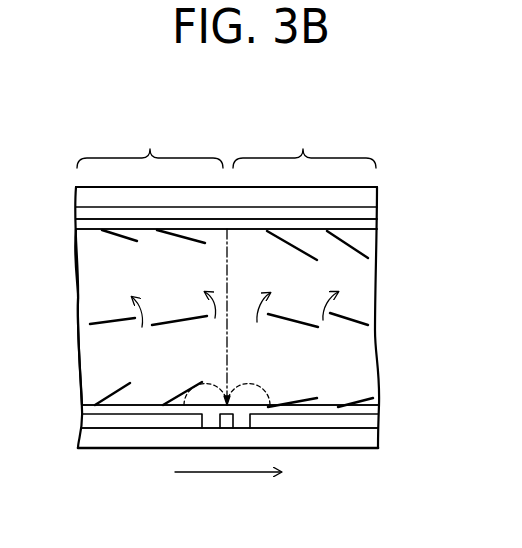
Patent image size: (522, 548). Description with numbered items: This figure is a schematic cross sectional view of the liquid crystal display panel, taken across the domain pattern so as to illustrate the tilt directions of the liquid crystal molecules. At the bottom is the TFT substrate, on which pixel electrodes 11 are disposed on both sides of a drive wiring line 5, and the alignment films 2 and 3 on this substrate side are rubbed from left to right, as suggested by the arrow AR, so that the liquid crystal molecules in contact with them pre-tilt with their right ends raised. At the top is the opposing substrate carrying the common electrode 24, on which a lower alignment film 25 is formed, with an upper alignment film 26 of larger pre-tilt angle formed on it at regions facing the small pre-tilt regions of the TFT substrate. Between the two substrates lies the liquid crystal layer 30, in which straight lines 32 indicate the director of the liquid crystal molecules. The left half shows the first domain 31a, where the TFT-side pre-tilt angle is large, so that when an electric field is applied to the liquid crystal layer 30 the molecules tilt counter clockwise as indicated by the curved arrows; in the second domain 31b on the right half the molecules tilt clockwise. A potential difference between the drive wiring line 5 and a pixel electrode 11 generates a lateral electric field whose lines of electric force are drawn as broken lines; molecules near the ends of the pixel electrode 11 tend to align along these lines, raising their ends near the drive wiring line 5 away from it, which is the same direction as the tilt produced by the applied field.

The alignment film 2 is at (377, 410).
The alignment film 3 is at (377, 410).
The drive wiring line 5 is at (225, 424).
The pixel electrodes 11 is at (87, 423).
The common electrode 24 is at (372, 212).
The lower alignment film 25 is at (372, 226).
The upper alignment film 26 is at (372, 226).
The liquid crystal layer 30 is at (85, 282).
The first domain 31a is at (150, 137).
The second domain 31b is at (304, 137).
The straight lines 32 is at (118, 235).
The alignment rubbing direction AR is at (240, 472).